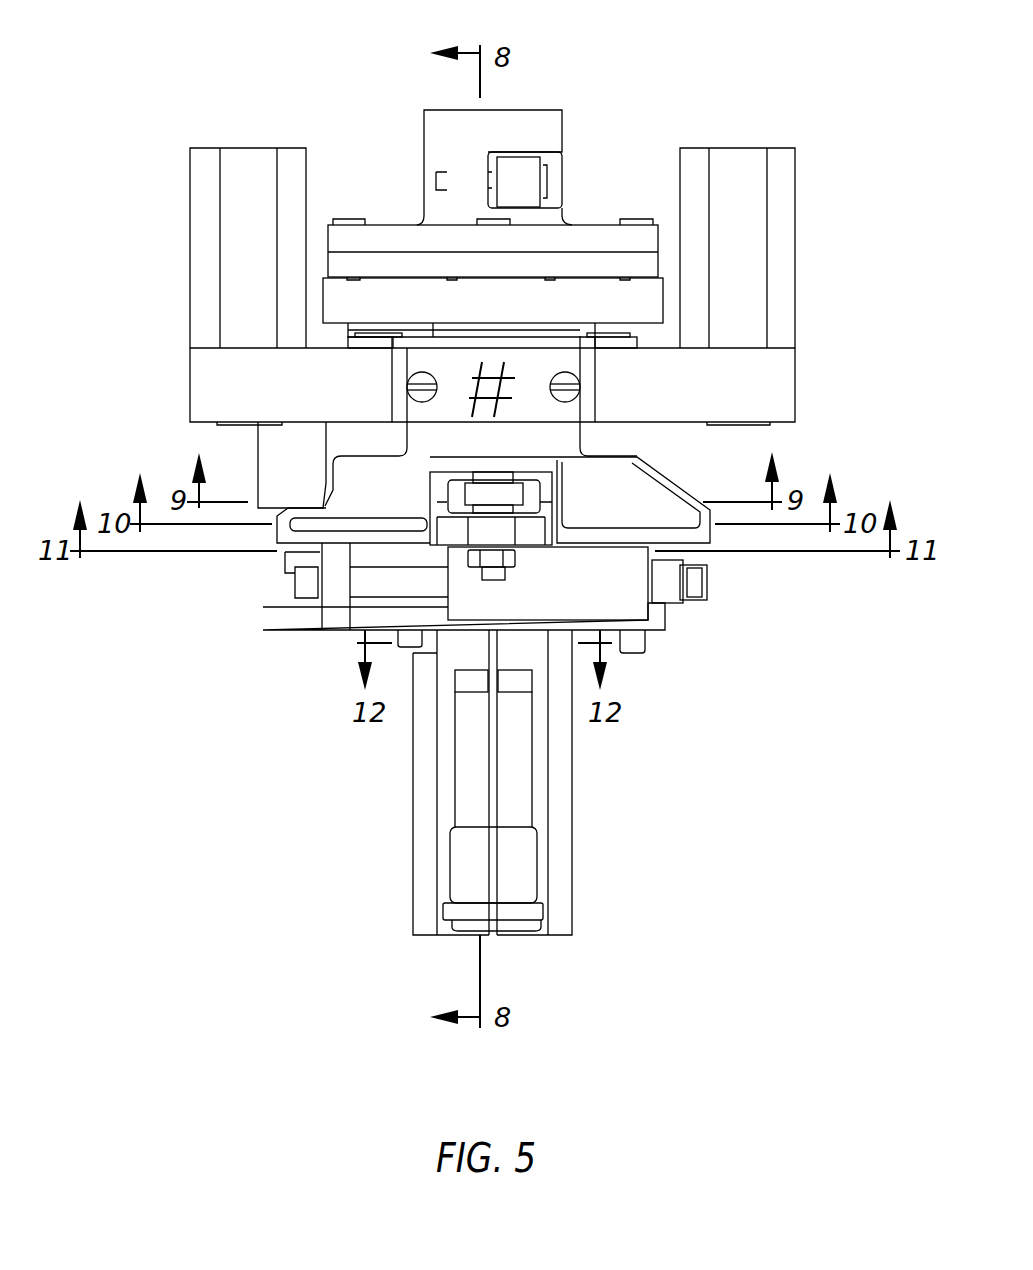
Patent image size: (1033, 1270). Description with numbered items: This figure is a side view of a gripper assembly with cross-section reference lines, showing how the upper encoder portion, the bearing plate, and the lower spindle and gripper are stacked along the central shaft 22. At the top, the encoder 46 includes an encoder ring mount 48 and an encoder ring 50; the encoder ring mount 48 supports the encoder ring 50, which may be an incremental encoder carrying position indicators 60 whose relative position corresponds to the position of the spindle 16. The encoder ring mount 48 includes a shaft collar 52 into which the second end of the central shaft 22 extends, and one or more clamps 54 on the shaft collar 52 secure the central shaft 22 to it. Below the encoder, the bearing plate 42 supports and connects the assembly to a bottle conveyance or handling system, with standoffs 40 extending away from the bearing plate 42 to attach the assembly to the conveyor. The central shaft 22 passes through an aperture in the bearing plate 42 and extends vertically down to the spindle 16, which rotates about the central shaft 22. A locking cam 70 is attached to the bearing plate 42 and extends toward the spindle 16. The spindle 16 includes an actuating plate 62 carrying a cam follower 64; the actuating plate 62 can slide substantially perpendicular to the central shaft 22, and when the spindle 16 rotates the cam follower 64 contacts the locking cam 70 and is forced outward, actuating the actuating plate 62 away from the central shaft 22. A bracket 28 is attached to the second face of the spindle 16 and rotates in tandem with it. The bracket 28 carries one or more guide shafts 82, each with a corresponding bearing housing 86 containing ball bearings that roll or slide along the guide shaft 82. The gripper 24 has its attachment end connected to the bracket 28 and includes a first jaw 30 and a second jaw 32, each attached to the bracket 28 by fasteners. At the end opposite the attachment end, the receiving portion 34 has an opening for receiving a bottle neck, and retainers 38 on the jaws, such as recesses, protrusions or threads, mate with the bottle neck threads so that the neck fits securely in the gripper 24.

The spindle 16 is at (678, 474).
The central shaft 22 is at (556, 329).
The gripper 24 is at (469, 796).
The bracket 28 is at (273, 640).
The first jaw 30 is at (400, 832).
The second jaw 32 is at (586, 828).
The receiving portion 34 is at (518, 948).
The retainers 38 is at (478, 822).
The standoffs 40 is at (183, 232).
The bearing plate 42 is at (805, 380).
The encoder 46 is at (335, 80).
The encoder ring mount 48 is at (388, 218).
The encoder ring 50 is at (335, 328).
The shaft collar 52 is at (528, 100).
The clamp 54 is at (548, 165).
The position indicators 60 is at (452, 282).
The actuating plate 62 is at (453, 553).
The cam follower 64 is at (528, 522).
The locking cam 70 is at (252, 462).
The guide shafts 82 is at (367, 598).
The bearing housing 86 is at (640, 637).